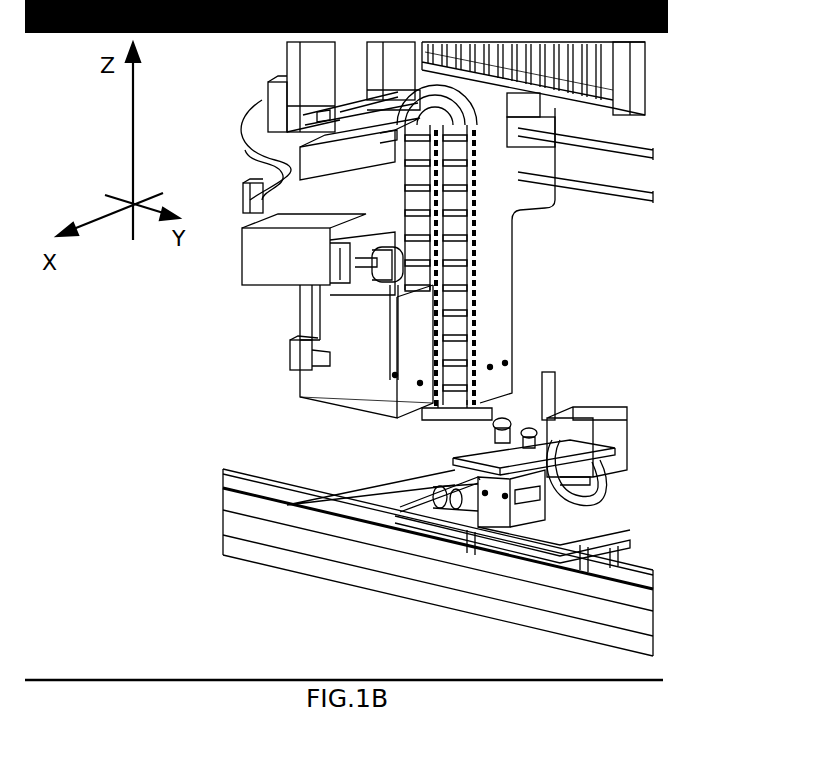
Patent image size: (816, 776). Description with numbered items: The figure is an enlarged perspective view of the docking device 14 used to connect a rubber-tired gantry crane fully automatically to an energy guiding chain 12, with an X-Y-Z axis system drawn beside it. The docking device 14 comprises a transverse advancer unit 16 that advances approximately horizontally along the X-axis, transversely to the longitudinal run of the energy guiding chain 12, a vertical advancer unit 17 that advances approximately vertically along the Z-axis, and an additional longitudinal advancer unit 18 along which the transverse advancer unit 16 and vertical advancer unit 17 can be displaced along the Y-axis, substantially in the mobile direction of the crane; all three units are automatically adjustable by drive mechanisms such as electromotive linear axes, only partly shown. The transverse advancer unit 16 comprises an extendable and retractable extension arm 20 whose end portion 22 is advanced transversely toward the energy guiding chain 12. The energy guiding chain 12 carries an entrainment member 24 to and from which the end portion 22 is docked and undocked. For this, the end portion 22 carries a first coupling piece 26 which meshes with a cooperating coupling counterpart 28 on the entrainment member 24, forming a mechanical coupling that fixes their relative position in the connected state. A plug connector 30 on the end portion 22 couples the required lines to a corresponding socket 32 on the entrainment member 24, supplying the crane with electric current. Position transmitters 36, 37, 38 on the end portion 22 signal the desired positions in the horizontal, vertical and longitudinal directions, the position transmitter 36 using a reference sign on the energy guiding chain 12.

The energy guiding chain 12 is at (345, 502).
The docking device 14 is at (193, 382).
The transverse advancer unit 16 is at (435, 309).
The vertical advancer unit 17 is at (383, 366).
The longitudinal advancer unit 18 is at (615, 212).
The extension arm 20 is at (358, 185).
The end portion 22 is at (255, 251).
The entrainment member 24 is at (646, 502).
The first coupling piece 26 is at (319, 298).
The coupling counterpart 28 is at (530, 408).
The plug connector 30 is at (447, 275).
The socket 32 is at (607, 430).
The position transmitter 36 is at (248, 192).
The position transmitter 37 is at (297, 352).
The position transmitter 38 is at (410, 262).